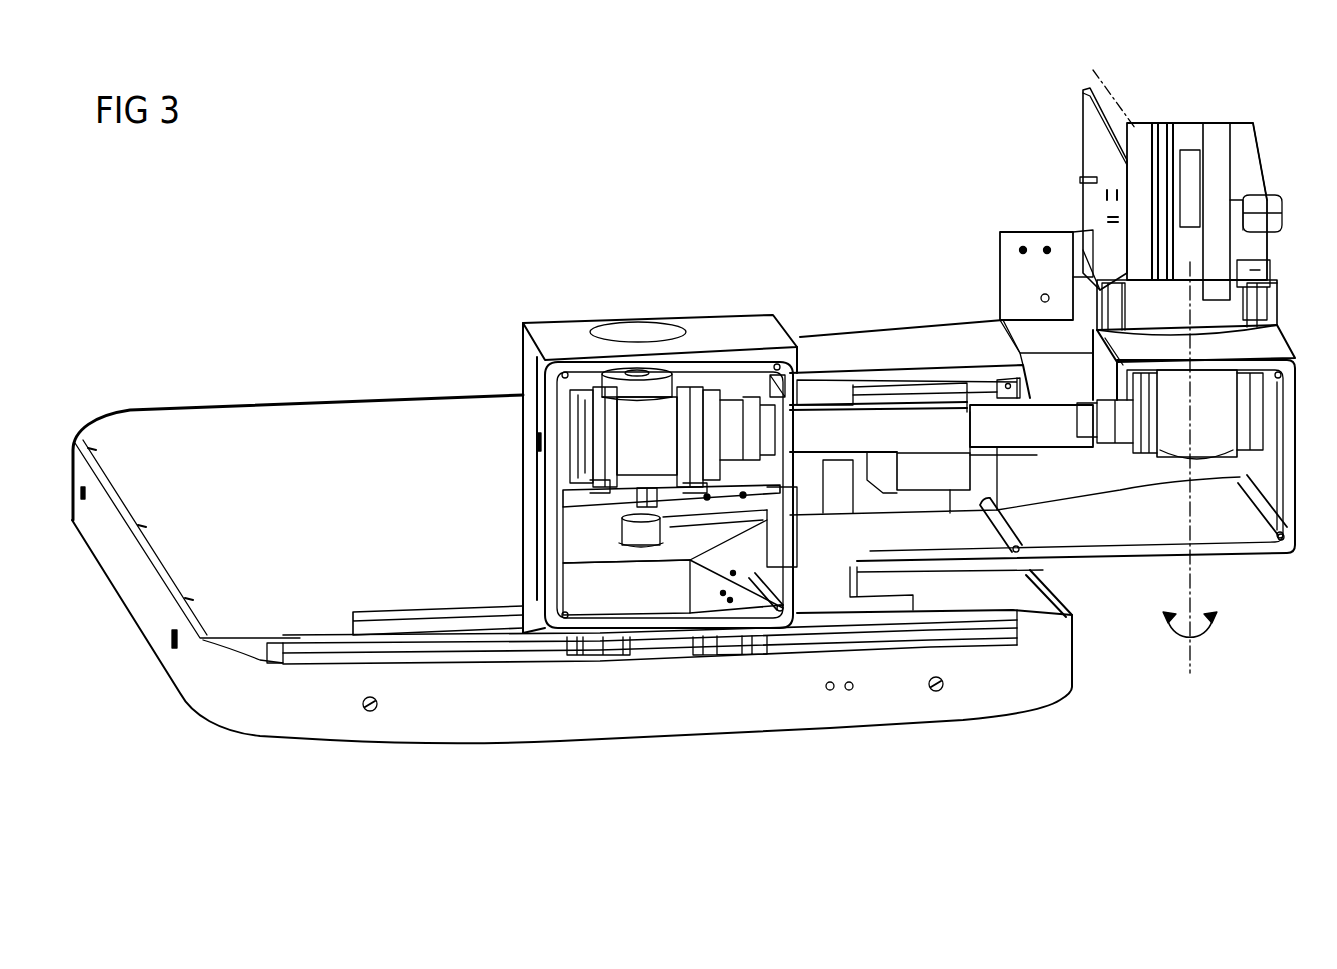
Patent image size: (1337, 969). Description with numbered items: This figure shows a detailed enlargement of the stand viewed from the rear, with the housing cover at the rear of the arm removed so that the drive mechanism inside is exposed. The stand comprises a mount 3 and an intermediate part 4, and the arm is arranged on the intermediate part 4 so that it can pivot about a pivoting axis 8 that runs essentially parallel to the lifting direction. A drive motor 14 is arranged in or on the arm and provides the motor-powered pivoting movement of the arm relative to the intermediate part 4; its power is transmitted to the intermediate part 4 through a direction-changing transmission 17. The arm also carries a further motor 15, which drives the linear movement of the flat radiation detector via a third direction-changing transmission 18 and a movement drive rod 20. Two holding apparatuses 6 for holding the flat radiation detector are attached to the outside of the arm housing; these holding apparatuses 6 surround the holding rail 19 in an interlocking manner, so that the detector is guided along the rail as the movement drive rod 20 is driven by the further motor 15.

The mount 3 is at (1100, 160).
The intermediate part 4 is at (1252, 247).
The holding apparatuses 6 is at (594, 650).
The pivoting axis 8 is at (1192, 588).
The drive motor 14 is at (1070, 423).
The further motor 15 is at (845, 430).
The direction-changing transmission 17 is at (1203, 413).
The third direction-changing transmission 18 is at (657, 417).
The holding rail 19 is at (471, 634).
The movement drive rod 20 is at (633, 527).